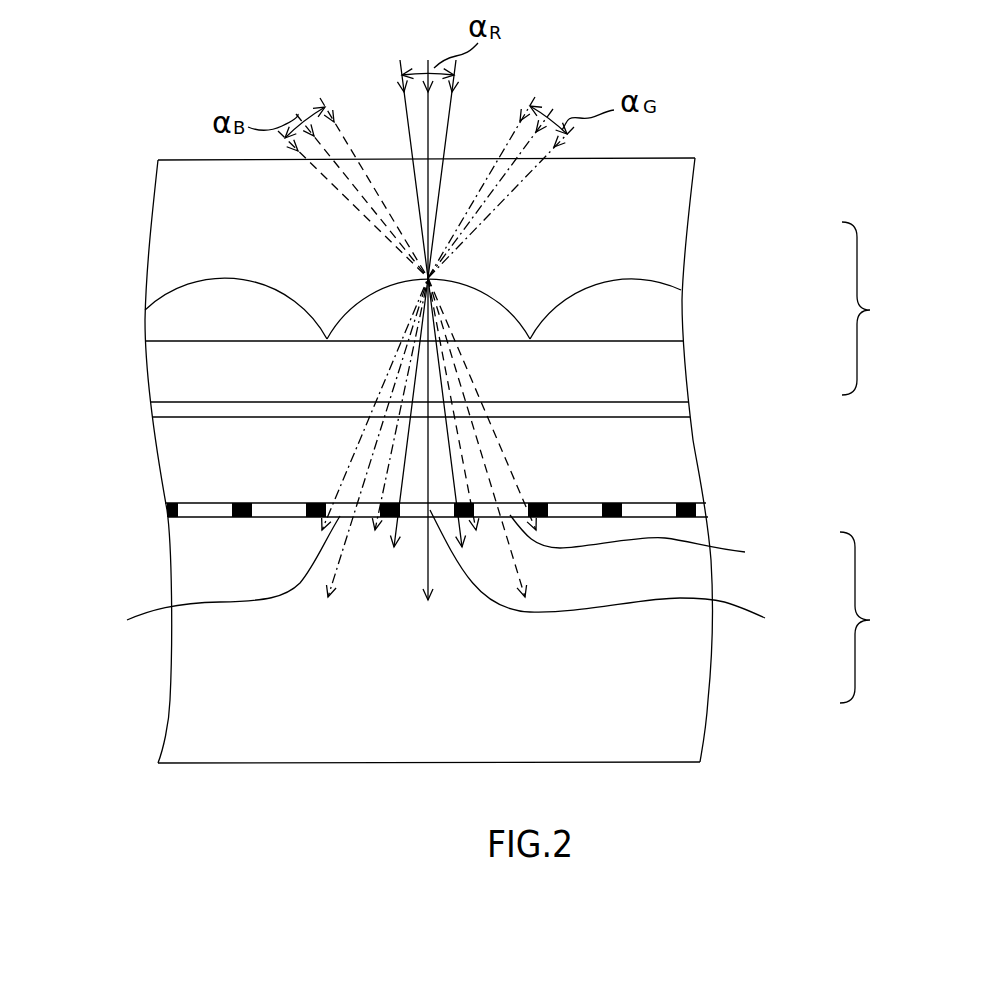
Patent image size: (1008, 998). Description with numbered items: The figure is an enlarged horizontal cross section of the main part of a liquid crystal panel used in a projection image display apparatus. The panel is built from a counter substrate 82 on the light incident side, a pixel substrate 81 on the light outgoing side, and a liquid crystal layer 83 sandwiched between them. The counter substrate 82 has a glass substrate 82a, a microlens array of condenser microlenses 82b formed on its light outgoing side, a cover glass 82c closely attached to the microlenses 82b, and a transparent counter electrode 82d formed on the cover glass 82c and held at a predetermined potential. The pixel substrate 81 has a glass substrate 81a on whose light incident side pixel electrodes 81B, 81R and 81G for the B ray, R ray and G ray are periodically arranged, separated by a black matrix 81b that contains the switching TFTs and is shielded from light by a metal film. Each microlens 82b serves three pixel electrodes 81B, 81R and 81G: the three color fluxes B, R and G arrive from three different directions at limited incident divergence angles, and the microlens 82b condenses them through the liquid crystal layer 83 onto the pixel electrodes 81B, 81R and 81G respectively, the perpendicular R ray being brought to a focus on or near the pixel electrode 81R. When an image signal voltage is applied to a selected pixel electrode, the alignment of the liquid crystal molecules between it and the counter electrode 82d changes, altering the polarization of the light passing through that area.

The counter substrate 82 is at (878, 308).
The glass substrate 82a is at (665, 172).
The microlens 82b is at (658, 322).
The cover glass 82c is at (660, 357).
The counter electrode 82d is at (665, 407).
The liquid crystal layer 83 is at (672, 452).
The pixel substrate 81 is at (877, 617).
The glass substrate 81a is at (663, 680).
The black matrix 81b is at (237, 503).
The pixel electrode for B ray 81B is at (663, 542).
The pixel electrode for R ray 81R is at (629, 572).
The pixel electrode for G ray 81G is at (197, 577).
The R ray R is at (428, 309).
The B ray B is at (407, 334).
The G ray G is at (451, 336).